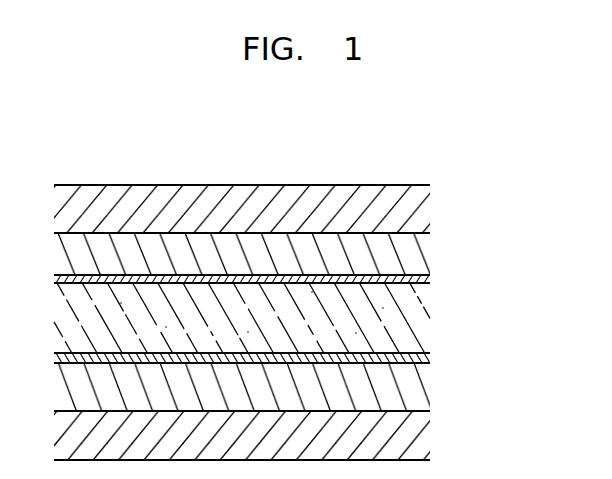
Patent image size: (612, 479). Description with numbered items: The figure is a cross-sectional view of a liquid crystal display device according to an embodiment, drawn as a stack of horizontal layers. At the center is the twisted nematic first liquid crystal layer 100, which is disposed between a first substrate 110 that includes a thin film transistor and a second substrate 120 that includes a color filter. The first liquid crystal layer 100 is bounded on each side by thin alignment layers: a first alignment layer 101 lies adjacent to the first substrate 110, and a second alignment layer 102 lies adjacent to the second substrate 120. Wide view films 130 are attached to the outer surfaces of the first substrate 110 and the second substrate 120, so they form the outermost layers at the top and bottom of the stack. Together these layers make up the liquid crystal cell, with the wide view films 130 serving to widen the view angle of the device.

The wide view films 130 is at (425, 213).
The second substrate 120 is at (425, 258).
The second alignment layer 102 is at (428, 279).
The first liquid crystal layer 100 is at (425, 318).
The first alignment layer 101 is at (428, 359).
The first substrate 110 is at (425, 389).